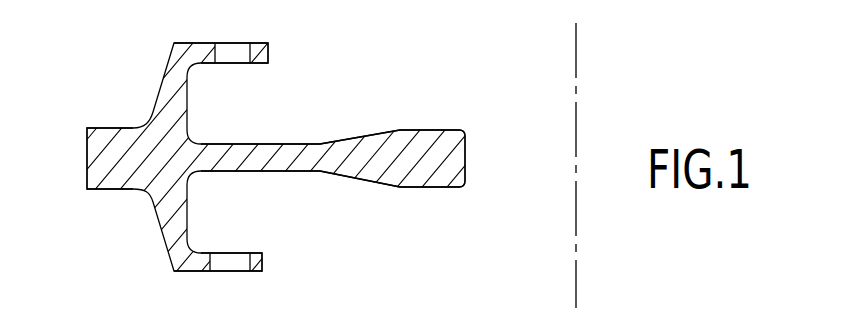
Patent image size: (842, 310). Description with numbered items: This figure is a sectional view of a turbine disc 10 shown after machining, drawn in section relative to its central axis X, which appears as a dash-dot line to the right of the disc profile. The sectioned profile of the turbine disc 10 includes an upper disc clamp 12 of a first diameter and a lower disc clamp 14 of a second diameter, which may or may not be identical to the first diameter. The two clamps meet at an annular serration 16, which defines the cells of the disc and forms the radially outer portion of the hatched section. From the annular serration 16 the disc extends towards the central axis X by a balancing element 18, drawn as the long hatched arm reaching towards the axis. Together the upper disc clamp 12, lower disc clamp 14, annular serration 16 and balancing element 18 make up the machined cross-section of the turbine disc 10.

The turbine disc 10 is at (88, 54).
The upper disc clamp 12 is at (267, 52).
The lower disc clamp 14 is at (260, 262).
The annular serration 16 is at (93, 151).
The balancing element 18 is at (432, 142).
The central axis X is at (578, 41).